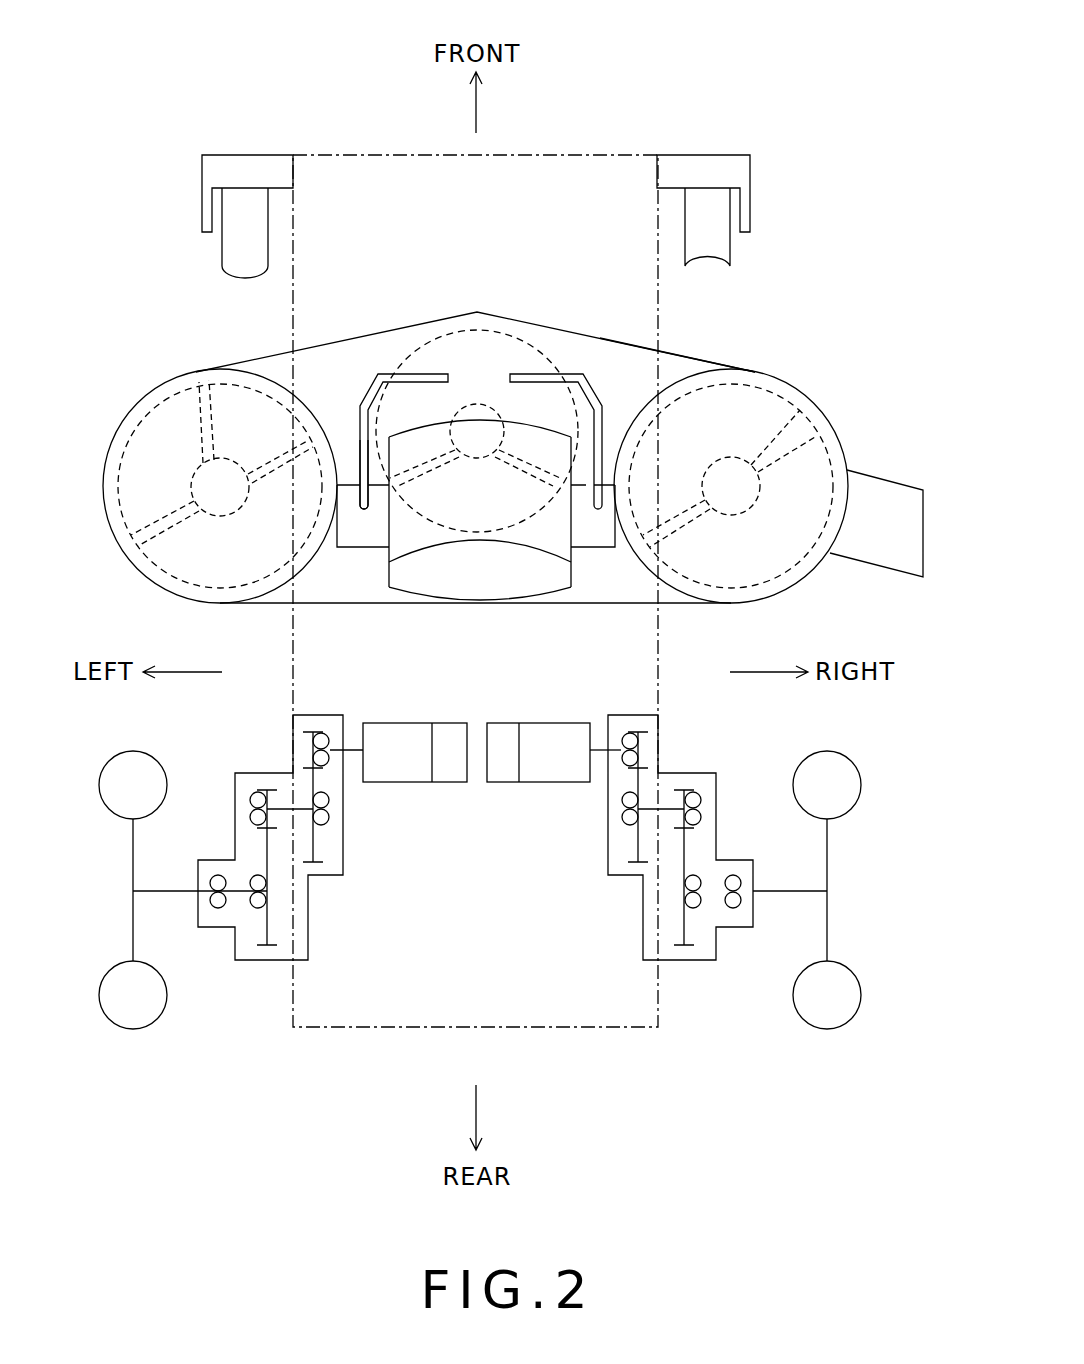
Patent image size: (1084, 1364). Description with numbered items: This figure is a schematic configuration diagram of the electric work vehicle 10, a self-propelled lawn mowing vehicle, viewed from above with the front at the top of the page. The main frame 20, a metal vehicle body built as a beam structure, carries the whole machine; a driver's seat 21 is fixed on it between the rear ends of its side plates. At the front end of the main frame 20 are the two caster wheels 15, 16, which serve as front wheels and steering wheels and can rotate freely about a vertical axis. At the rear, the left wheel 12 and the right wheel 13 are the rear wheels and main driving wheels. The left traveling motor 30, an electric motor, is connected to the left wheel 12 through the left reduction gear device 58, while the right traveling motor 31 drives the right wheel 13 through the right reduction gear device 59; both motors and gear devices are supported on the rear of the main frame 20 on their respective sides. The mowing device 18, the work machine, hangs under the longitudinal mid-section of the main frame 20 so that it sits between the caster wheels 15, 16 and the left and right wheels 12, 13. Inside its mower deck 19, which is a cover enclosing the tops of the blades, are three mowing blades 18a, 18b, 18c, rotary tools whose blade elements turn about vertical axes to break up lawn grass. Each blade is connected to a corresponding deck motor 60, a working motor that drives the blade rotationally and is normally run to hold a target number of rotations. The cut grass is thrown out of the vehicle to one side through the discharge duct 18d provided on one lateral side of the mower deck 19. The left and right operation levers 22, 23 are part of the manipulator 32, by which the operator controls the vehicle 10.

The electric work vehicle 10 is at (690, 102).
The left wheel 12 is at (168, 998).
The right wheel 13 is at (793, 998).
The caster wheel 15 is at (222, 247).
The caster wheel 16 is at (730, 247).
The mowing device 18 is at (687, 351).
The mowing blade 18a is at (207, 386).
The mowing blade 18b is at (501, 408).
The mowing blade 18c is at (830, 410).
The discharge duct 18d is at (857, 567).
The mower deck 19 is at (562, 328).
The main frame 20 is at (663, 637).
The driver's seat 21 is at (503, 578).
The left operation lever 22 is at (425, 372).
The right operation lever 23 is at (573, 374).
The left traveling motor 30 is at (400, 721).
The right traveling motor 31 is at (557, 721).
The manipulator 32 is at (384, 363).
The left reduction gear device 58 is at (308, 938).
The right reduction gear device 59 is at (643, 938).
The deck motor 60 is at (233, 517).